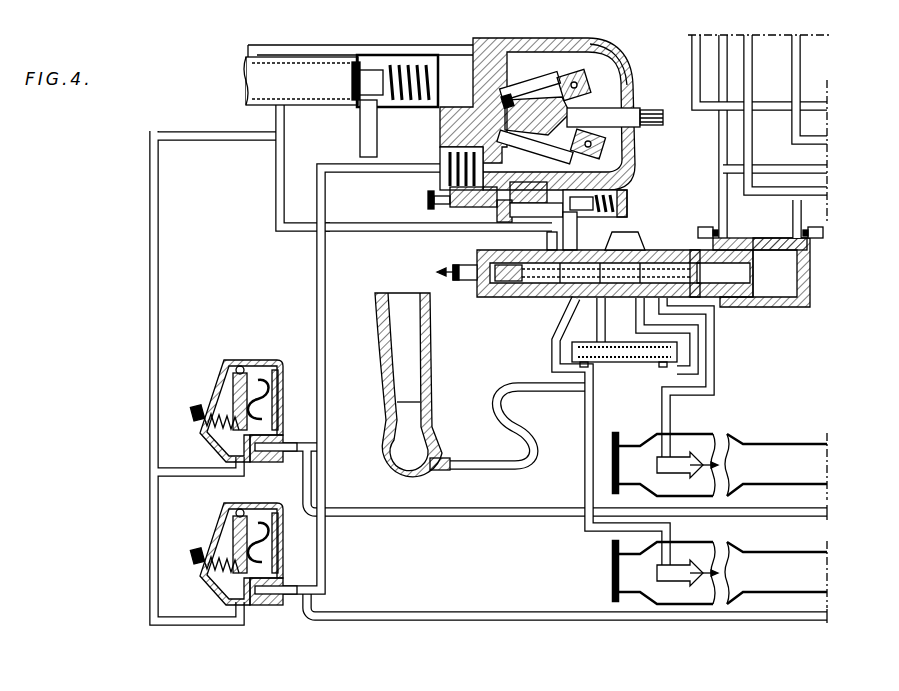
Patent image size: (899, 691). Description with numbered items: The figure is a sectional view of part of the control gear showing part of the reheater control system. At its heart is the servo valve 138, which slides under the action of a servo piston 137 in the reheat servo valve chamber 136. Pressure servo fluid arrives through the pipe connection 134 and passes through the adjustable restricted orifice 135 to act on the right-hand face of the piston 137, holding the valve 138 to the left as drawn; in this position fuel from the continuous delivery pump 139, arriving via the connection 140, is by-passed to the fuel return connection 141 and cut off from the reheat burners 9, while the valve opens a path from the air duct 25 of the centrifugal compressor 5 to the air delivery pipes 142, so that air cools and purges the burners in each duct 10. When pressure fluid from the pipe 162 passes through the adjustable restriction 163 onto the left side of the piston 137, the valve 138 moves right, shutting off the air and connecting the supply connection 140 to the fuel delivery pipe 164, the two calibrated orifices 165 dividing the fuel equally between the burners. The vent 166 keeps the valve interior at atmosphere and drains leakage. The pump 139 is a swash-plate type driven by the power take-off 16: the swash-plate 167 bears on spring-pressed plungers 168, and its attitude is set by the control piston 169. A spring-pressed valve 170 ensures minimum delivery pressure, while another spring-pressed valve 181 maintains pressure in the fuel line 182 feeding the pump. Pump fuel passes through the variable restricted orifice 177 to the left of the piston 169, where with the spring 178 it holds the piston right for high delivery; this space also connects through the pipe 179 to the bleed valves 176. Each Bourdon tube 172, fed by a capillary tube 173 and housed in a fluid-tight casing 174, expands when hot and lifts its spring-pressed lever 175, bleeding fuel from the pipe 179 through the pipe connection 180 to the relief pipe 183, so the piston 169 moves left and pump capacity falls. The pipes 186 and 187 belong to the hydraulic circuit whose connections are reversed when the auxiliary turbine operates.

The centrifugal compressor 5 is at (434, 367).
The reheat burners 9 is at (705, 463).
The duct 10 is at (785, 455).
The power take-off 16 is at (647, 110).
The air duct 25 is at (477, 461).
The pipe connection 134 is at (746, 58).
The adjustable restricted orifice 135 is at (815, 239).
The reheat servo valve chamber 136 is at (805, 290).
The servo piston 137 is at (752, 298).
The servo valve 138 is at (515, 298).
The continuous delivery pump 139 is at (610, 82).
The connection 140 is at (578, 232).
The fuel return connection 141 is at (375, 232).
The air delivery pipes 142 is at (553, 358).
The pipe 162 is at (724, 80).
The adjustable restriction 163 is at (711, 228).
The fuel delivery pipe 164 is at (563, 336).
The calibrated orifices 165 is at (655, 362).
The vent 166 is at (463, 265).
The swash-plate 167 is at (587, 68).
The spring-pressed plungers 168 is at (533, 84).
The control piston 169 is at (443, 160).
The spring-pressed valve 170 is at (612, 194).
The Bourdon tube 172 is at (256, 383).
The capillary tube 173 is at (470, 514).
The fluid-tight casing 174 is at (228, 372).
The spring-pressed lever 175 is at (238, 395).
The bleed valve 176 is at (257, 455).
The variable restricted orifice 177 is at (440, 214).
The spring 178 is at (430, 197).
The pipe 179 is at (317, 257).
The pipe connection 180 is at (155, 244).
The spring-pressed valve 181 is at (348, 104).
The fuel line 182 is at (272, 80).
The relief pipe 183 is at (367, 112).
The pipe 186 is at (693, 47).
The pipe 187 is at (800, 58).